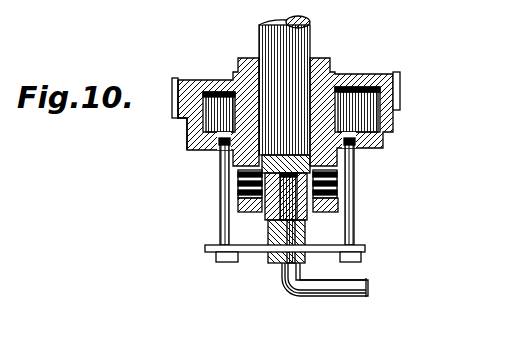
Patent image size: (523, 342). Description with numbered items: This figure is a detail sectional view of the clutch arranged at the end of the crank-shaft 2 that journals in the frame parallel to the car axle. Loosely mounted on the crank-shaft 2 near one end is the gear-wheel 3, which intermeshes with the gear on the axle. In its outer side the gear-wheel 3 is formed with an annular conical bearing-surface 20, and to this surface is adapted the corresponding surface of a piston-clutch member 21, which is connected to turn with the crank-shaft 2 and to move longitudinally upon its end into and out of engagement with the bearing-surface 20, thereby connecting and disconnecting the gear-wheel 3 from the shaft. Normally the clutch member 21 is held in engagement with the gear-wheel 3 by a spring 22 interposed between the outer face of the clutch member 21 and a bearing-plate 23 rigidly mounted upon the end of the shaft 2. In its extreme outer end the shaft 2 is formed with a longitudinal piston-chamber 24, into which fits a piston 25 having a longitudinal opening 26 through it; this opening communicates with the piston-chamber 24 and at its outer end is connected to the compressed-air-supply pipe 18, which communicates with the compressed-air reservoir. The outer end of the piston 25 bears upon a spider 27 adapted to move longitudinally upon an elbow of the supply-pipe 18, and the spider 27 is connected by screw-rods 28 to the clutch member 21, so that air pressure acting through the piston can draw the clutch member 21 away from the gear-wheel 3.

The crank-shaft 2 is at (314, 33).
The gear-wheel 3 is at (172, 84).
The compressed-air-supply pipe 18 is at (333, 302).
The annular conical bearing-surface 20 is at (392, 86).
The piston-clutch member 21 is at (185, 137).
The spring 22 is at (223, 180).
The bearing-plate 23 is at (338, 207).
The piston-chamber 24 is at (337, 178).
The piston 25 is at (240, 207).
The longitudinal opening 26 is at (310, 228).
The spider 27 is at (206, 247).
The screw-rods 28 is at (228, 163).